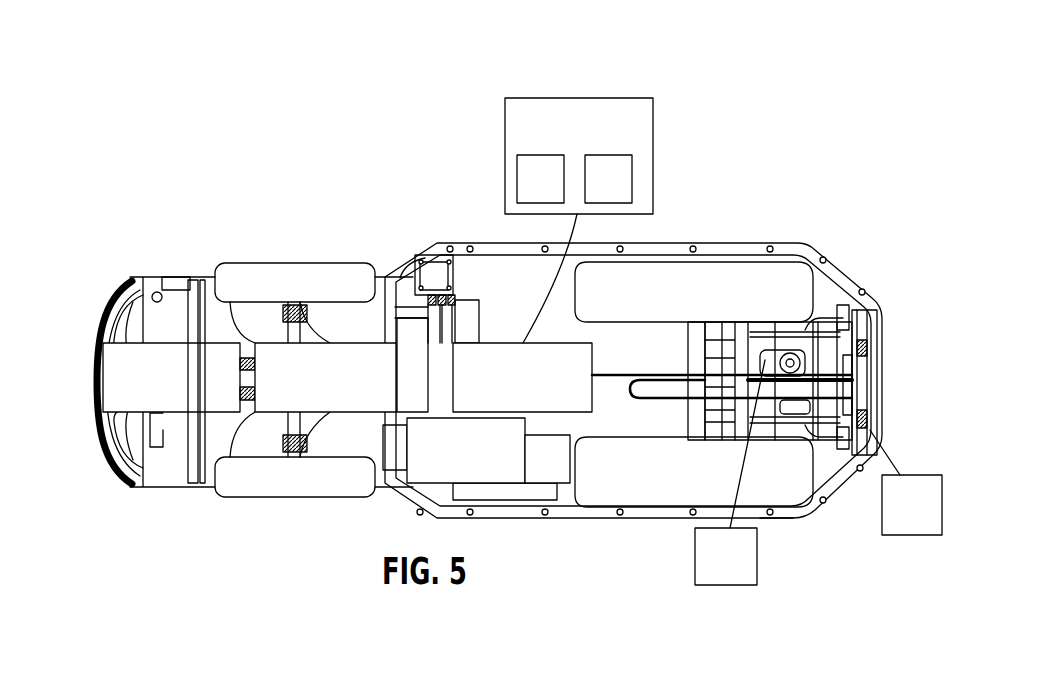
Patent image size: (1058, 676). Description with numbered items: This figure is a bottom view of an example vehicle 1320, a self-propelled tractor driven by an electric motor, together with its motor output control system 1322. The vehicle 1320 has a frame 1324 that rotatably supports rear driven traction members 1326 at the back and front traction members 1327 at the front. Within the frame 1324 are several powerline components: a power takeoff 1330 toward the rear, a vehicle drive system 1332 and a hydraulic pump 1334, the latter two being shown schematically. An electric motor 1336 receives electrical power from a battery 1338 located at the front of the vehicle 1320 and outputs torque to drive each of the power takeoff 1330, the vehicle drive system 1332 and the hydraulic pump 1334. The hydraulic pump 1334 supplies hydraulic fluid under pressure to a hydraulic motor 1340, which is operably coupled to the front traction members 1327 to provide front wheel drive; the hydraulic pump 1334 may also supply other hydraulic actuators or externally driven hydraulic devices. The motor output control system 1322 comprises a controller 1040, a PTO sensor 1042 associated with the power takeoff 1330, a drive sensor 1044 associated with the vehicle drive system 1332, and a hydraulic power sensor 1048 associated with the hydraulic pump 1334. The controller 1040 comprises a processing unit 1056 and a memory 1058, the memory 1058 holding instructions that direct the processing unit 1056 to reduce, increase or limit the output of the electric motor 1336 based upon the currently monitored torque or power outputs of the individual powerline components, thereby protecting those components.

The vehicle 1320 is at (78, 206).
The motor output control system 1322 is at (662, 90).
The frame 1324 is at (673, 247).
The rear driven traction members 1326 is at (812, 502).
The front traction members 1327 is at (247, 498).
The power takeoff 1330 is at (868, 362).
The vehicle drive system 1332 is at (733, 355).
The hydraulic pump 1334 is at (493, 487).
The electric motor 1336 is at (507, 343).
The battery 1338 is at (160, 292).
The hydraulic motor 1340 is at (362, 413).
The controller 1040 is at (653, 140).
The PTO sensor 1042 is at (925, 475).
The drive sensor 1044 is at (758, 572).
The hydraulic power sensor 1048 is at (587, 485).
The processing unit 1056 is at (517, 180).
The memory 1058 is at (632, 183).